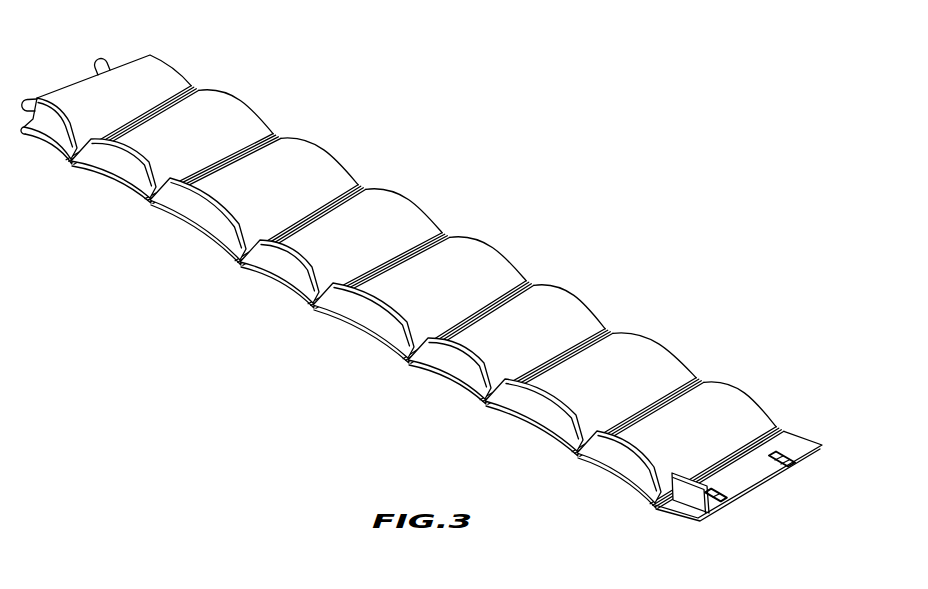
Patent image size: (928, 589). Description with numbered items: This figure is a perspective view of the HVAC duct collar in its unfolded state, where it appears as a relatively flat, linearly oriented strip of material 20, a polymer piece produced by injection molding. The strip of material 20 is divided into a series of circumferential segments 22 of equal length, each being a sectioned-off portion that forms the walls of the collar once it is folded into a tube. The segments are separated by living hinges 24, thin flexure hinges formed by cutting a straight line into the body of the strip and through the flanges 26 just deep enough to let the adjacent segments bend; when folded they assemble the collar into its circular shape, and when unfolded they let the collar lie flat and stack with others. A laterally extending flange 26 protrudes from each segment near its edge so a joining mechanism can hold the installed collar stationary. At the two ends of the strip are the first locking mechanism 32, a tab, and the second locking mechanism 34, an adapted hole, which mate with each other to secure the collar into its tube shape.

The strip of material 20 is at (90, 97).
The circumferential segments 22 is at (801, 446).
The living hinges 24 is at (655, 508).
The flange 26 is at (690, 490).
The first locking mechanism 32 is at (105, 64).
The second locking mechanism 34 is at (716, 488).